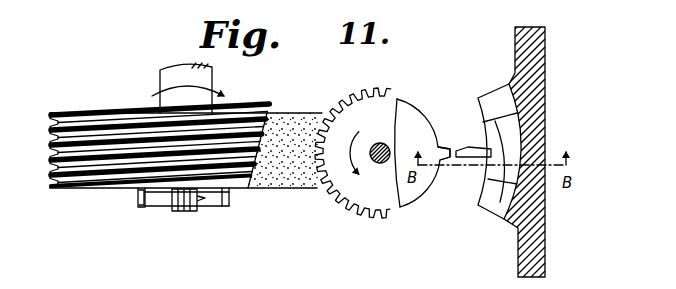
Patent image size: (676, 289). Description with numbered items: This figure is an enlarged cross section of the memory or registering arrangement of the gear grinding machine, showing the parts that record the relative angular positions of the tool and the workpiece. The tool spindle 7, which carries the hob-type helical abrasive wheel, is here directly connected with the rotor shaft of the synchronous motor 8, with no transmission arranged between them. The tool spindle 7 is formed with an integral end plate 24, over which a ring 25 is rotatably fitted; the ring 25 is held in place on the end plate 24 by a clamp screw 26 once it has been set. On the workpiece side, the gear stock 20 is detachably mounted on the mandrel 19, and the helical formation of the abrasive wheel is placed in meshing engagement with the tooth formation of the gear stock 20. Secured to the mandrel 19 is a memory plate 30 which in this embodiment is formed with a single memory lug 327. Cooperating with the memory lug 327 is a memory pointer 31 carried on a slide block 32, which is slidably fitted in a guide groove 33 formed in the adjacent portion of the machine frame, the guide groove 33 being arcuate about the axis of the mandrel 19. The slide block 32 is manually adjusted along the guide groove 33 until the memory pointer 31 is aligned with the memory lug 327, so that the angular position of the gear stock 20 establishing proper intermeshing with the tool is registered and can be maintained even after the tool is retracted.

The tool spindle 7 is at (204, 81).
The synchronous motor 8 is at (289, 114).
The mandrel 19 is at (384, 144).
The gear stock 20 is at (357, 98).
The end plate 24 is at (157, 208).
The ring 25 is at (133, 198).
The clamp screw 26 is at (185, 212).
The memory plate 30 is at (401, 208).
The memory pointer 31 is at (458, 160).
The slide block 32 is at (484, 119).
The guide groove 33 is at (496, 206).
The memory lug 327 is at (437, 163).